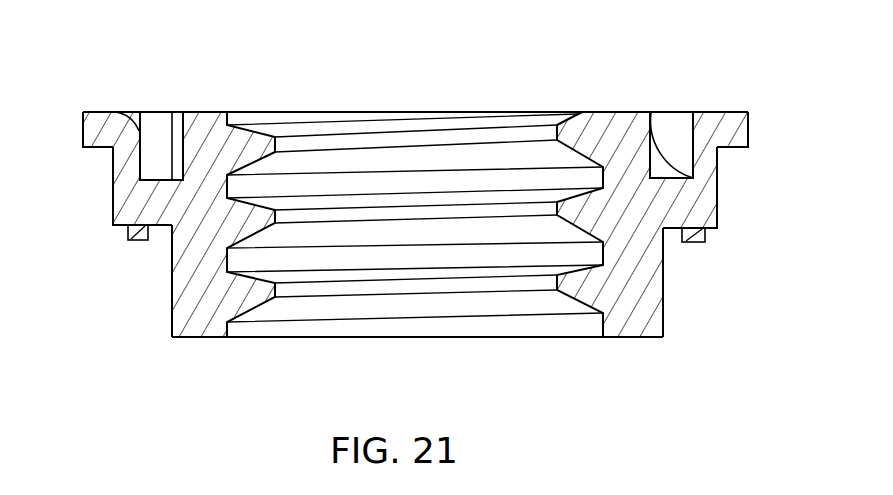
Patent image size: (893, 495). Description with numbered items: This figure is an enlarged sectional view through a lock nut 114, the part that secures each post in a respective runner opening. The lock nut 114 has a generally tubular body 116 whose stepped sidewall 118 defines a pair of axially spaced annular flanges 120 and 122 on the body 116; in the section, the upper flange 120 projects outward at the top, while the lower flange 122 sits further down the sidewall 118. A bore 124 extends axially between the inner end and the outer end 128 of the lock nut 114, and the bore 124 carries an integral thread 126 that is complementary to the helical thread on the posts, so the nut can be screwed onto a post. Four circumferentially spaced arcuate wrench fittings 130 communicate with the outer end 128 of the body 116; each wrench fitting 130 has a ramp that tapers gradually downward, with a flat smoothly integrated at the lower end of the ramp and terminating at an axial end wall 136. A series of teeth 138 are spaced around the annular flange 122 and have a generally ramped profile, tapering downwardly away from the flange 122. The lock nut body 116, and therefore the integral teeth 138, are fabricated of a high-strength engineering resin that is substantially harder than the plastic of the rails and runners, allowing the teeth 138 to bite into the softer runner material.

The lock nut 114 is at (155, 319).
The tubular body 116 is at (663, 337).
The stepped sidewall 118 is at (665, 297).
The annular flange 120 is at (748, 150).
The annular flange 122 is at (705, 233).
The bore 124 is at (524, 112).
The integral thread 126 is at (264, 152).
The outer end 128 is at (632, 112).
The wrench fitting 130 is at (114, 112).
The axial end wall 136 is at (175, 122).
The teeth 138 is at (128, 238).